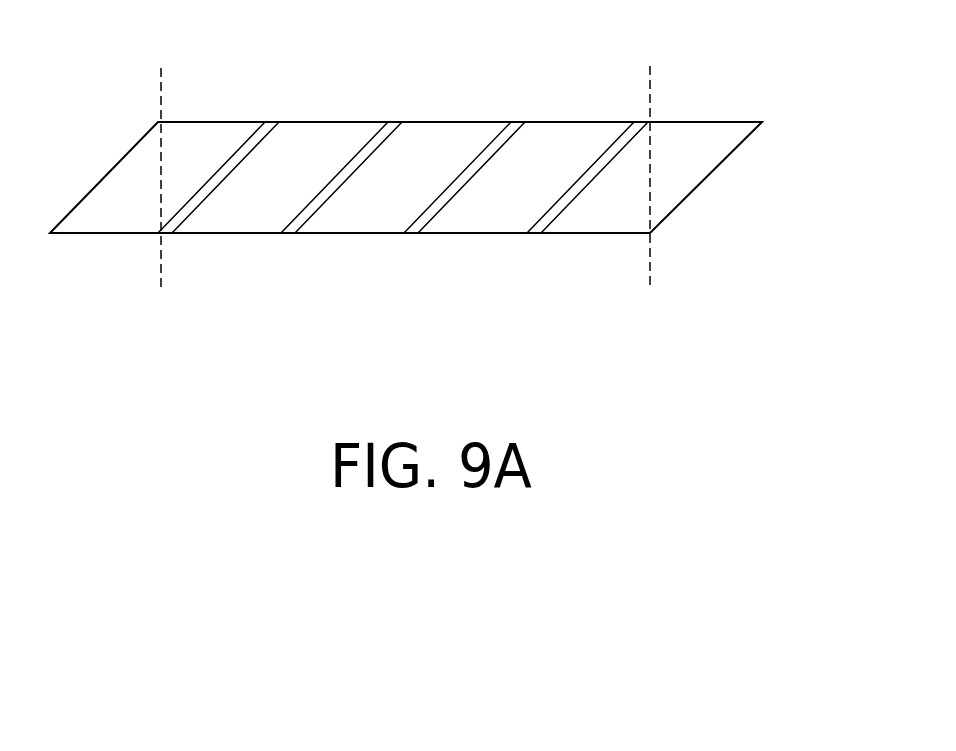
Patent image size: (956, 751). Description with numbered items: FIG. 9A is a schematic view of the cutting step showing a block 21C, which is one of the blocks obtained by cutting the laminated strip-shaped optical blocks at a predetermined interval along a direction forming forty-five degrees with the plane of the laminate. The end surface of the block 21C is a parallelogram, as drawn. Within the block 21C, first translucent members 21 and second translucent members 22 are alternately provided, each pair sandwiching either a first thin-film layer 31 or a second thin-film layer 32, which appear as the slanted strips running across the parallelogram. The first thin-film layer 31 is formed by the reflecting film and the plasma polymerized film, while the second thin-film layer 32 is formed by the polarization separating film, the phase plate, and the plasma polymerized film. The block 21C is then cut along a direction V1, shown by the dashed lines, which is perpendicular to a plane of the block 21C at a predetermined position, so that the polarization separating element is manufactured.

The block 21C is at (702, 180).
The first translucent member 21 is at (366, 222).
The second translucent member 22 is at (250, 222).
The first thin-film layer 31 is at (322, 205).
The second thin-film layer 32 is at (197, 205).
The direction V1 is at (162, 90).